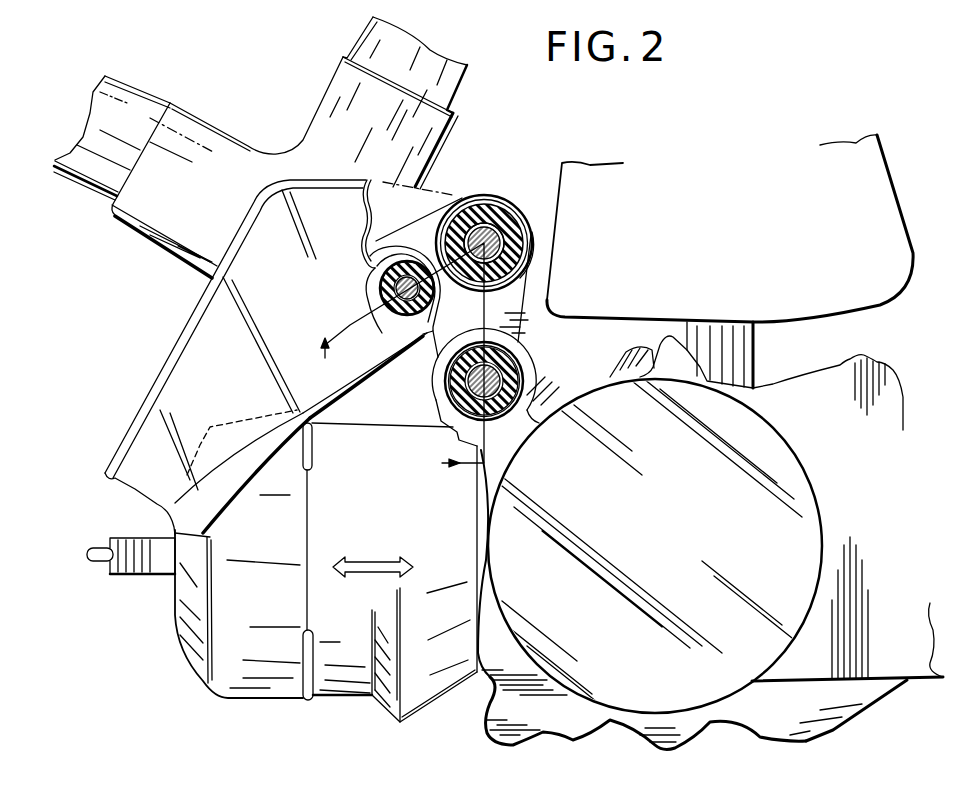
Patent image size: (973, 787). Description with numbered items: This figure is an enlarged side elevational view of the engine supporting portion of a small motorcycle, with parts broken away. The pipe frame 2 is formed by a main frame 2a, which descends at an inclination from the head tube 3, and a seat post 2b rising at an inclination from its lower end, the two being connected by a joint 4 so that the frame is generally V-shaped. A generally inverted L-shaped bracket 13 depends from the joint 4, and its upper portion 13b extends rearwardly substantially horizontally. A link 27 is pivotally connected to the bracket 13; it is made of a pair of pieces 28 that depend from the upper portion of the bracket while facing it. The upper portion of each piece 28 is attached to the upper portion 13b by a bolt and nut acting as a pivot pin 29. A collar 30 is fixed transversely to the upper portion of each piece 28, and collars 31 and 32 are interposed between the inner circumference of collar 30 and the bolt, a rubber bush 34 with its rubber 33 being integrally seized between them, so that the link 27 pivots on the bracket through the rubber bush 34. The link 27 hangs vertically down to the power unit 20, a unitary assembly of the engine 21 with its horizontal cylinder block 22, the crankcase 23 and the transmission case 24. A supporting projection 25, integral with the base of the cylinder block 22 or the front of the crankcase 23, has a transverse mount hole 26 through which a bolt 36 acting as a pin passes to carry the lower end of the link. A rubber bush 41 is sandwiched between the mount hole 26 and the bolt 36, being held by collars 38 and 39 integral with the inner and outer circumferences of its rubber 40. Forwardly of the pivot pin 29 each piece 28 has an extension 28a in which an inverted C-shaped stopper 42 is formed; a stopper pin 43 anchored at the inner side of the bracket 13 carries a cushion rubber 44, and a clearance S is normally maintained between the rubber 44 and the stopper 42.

The frame 2 is at (133, 121).
The main frame 2a is at (118, 92).
The seat post 2b is at (408, 47).
The joint 4 is at (207, 133).
The bracket 13 is at (182, 399).
The upper portion of bracket 13b is at (452, 192).
The clearance S is at (366, 179).
The head tube 3 is at (400, 361).
The collar 30 is at (441, 200).
The collar 31 is at (490, 225).
The collar 32 is at (512, 208).
The rubber 33 is at (478, 212).
The rubber bush 34 is at (520, 231).
The pivot pin 29 is at (527, 243).
The piece 28 is at (519, 285).
The extension 28a is at (400, 232).
The link 27 is at (527, 305).
The stopper 42 is at (381, 270).
The stopper pin 43 is at (396, 293).
The cushion rubber 44 is at (380, 285).
The bolt 36 is at (521, 360).
The supporting projection 25 is at (545, 380).
The mount hole 26 is at (447, 372).
The rubber bush 41 is at (463, 387).
The rubber 40 is at (520, 400).
The collar 38 is at (497, 410).
The collar 39 is at (453, 407).
The power unit 20 is at (381, 708).
The engine 21 is at (298, 670).
The cylinder block 22 is at (447, 686).
The crankcase 23 is at (640, 697).
The transmission case 24 is at (913, 645).